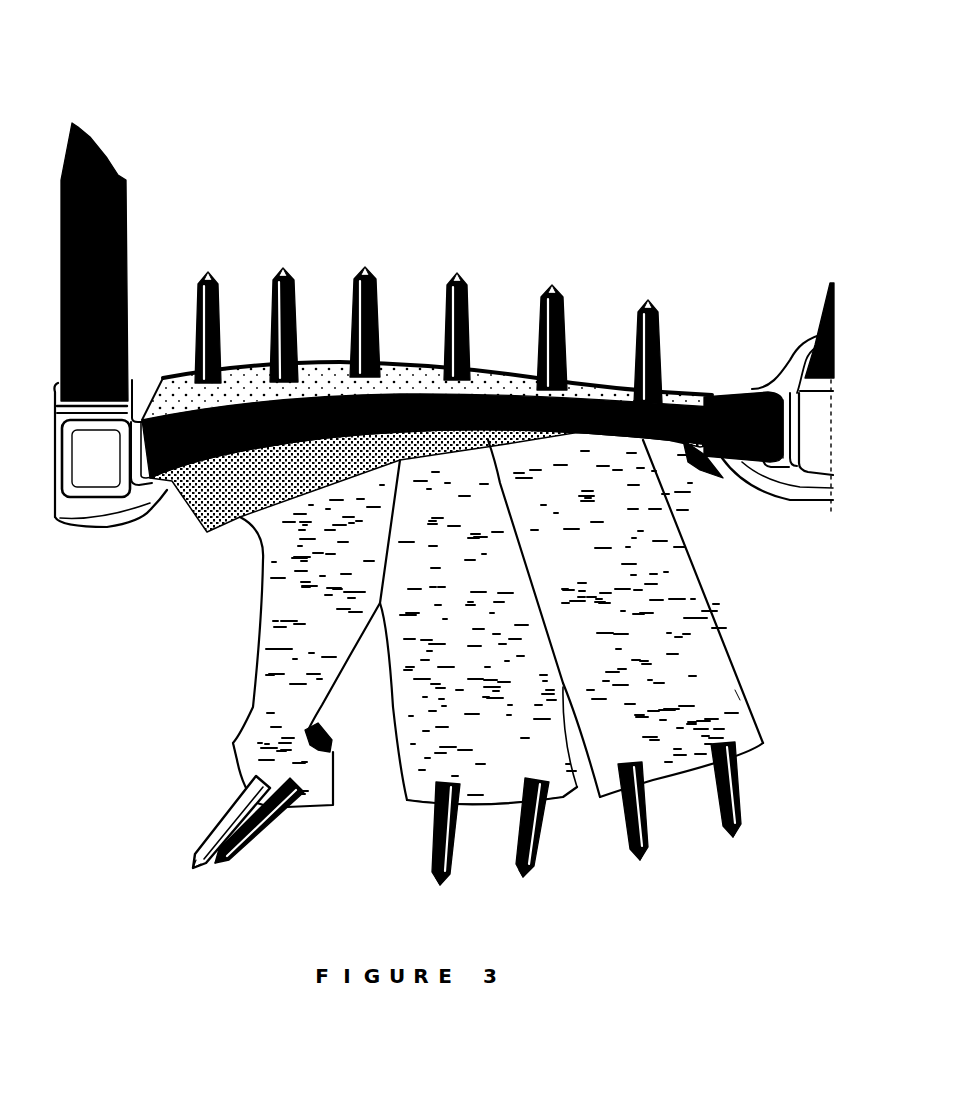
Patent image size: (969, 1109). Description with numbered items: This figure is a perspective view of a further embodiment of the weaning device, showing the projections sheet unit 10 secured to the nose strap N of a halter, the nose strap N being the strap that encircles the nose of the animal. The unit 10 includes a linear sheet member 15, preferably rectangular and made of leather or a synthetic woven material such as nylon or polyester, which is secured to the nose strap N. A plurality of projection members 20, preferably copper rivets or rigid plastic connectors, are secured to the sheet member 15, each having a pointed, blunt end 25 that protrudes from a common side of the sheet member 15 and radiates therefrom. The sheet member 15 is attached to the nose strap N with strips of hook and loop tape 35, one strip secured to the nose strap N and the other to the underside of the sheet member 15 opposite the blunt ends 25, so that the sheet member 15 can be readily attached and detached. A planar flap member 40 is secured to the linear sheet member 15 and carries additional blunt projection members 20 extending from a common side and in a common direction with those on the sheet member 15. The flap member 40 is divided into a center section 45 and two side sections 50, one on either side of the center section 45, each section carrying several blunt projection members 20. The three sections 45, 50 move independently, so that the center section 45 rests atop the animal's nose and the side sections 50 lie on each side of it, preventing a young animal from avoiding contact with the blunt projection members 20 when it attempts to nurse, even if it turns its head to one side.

The projections sheet unit 10 is at (398, 118).
The linear sheet member 15 is at (240, 385).
The projection members 20 is at (214, 292).
The pointed, blunt end 25 is at (203, 276).
The hook and loop tape 35 is at (165, 400).
The planar flap member 40 is at (657, 552).
The center section 45 is at (407, 800).
The side sections 50 is at (235, 742).
The nose strap N is at (167, 488).